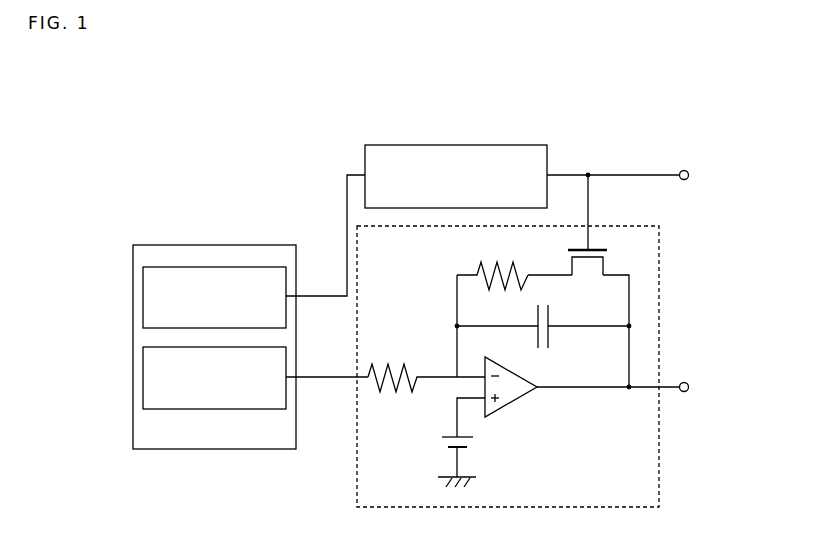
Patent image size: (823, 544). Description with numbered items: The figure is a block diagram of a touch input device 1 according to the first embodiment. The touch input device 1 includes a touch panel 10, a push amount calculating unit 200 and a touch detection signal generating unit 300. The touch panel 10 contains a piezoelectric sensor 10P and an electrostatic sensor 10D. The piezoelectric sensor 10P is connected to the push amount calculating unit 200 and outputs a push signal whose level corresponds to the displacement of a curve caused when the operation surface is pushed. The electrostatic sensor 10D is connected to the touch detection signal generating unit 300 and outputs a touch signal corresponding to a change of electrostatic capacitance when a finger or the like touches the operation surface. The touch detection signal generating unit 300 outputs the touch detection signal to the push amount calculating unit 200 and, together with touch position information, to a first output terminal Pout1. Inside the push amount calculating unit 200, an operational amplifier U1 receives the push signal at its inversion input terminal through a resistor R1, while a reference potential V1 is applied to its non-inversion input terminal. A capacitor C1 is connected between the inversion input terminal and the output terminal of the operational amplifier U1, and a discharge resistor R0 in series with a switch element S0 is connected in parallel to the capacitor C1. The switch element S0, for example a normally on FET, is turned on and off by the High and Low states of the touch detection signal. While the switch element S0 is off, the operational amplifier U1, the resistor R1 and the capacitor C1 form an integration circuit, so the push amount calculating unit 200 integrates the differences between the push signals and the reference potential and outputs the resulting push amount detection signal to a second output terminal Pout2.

The touch input device 1 is at (627, 89).
The touch panel 10 is at (257, 244).
The electrostatic sensor 10D is at (290, 275).
The piezoelectric sensor 10P is at (290, 357).
The touch detection signal generating unit 300 is at (498, 144).
The push amount calculating unit 200 is at (660, 244).
The switch element S0 is at (600, 225).
The discharge resistor R0 is at (492, 264).
The capacitor C1 is at (543, 324).
The resistor R1 is at (426, 368).
The operational amplifier U1 is at (512, 390).
The reference potential V1 is at (468, 462).
The first output terminal Pout1 is at (692, 165).
The second output terminal Pout2 is at (692, 376).